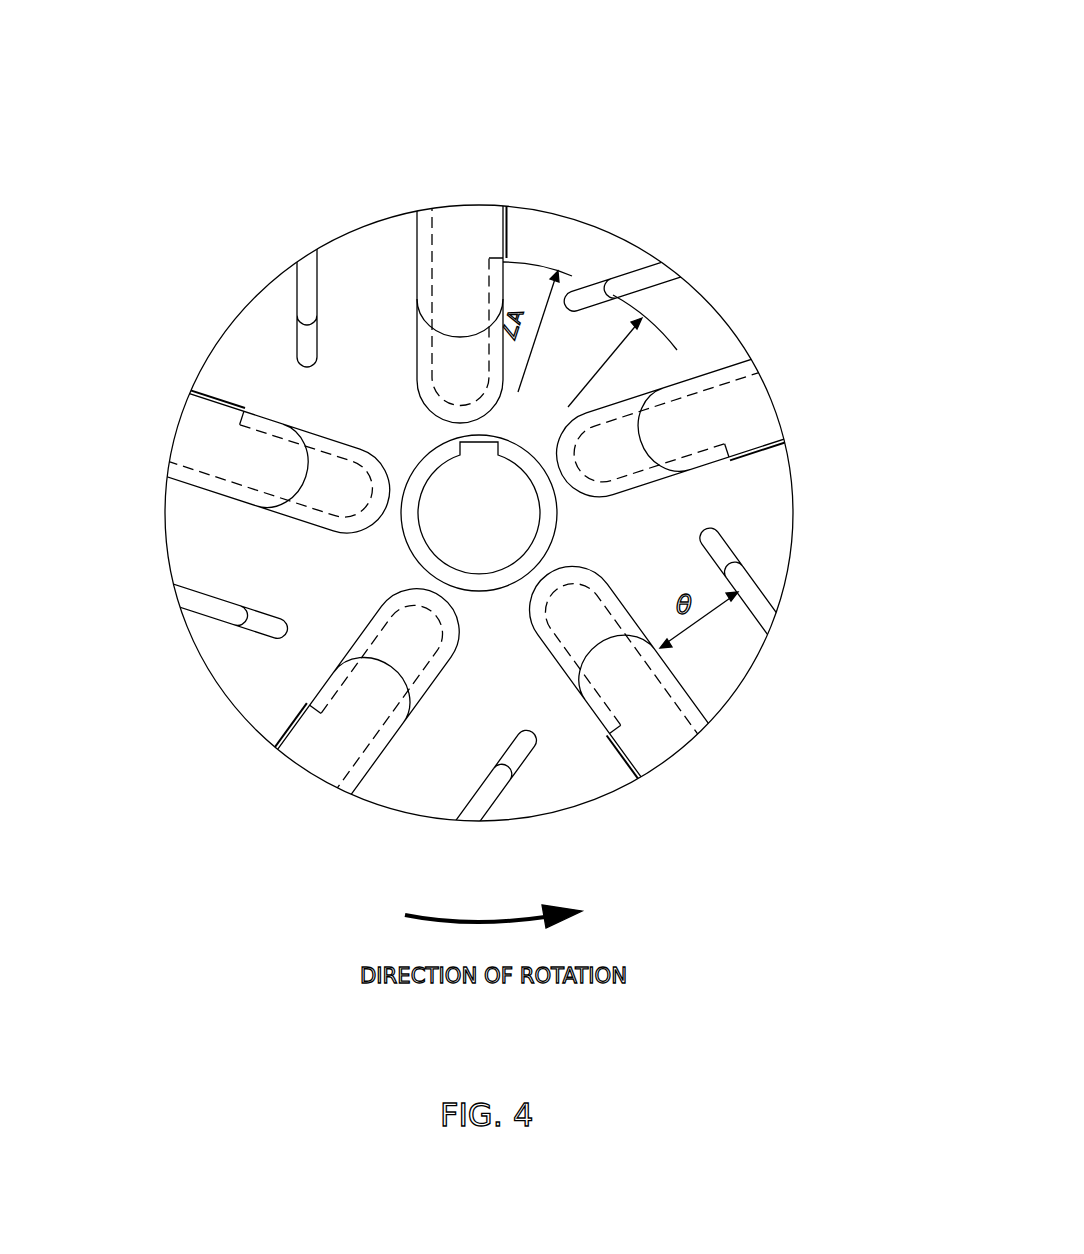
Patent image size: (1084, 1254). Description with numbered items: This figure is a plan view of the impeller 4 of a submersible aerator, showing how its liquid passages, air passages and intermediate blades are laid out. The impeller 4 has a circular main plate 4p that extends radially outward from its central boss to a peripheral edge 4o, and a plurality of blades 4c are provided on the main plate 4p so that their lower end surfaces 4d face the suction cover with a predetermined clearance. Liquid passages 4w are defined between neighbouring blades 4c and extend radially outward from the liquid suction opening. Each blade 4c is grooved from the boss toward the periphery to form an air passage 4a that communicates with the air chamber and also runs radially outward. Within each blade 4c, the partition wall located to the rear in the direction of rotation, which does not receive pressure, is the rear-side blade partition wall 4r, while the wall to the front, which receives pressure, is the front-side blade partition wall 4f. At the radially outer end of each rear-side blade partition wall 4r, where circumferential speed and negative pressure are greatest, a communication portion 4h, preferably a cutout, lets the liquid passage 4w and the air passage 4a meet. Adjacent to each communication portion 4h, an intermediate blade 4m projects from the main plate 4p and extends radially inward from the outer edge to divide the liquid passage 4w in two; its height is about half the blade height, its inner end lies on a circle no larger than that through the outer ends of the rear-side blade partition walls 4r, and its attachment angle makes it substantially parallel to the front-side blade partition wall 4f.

The impeller 4 is at (728, 308).
The air passage 4a is at (452, 278).
The blade 4c is at (448, 370).
The lower end surface 4d is at (690, 428).
The front-side blade partition wall 4f is at (417, 272).
The communication portion 4h is at (505, 242).
The intermediate blade 4m is at (665, 262).
The peripheral edge 4o is at (226, 327).
The main plate 4p is at (295, 393).
The rear-side blade partition wall 4r is at (503, 307).
The liquid passage 4w is at (552, 313).